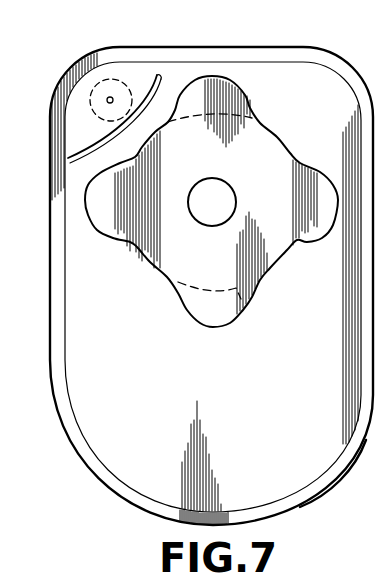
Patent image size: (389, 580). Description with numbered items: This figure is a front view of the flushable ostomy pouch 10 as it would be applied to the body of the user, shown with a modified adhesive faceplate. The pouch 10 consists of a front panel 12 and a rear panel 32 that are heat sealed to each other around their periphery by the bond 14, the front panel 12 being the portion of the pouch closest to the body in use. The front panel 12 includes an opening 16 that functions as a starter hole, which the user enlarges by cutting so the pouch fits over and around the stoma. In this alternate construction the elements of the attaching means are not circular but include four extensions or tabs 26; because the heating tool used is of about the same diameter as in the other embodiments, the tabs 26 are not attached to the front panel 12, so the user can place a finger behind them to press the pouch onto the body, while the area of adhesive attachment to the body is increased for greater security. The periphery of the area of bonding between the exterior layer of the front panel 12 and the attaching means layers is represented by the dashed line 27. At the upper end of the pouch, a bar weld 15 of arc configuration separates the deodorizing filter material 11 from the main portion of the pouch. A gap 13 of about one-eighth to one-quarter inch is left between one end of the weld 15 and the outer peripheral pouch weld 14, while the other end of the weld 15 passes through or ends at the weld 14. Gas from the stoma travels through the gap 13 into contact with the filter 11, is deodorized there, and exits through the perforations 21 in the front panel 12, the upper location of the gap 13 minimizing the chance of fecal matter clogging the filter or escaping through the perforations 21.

The flushable ostomy pouch 10 is at (88, 483).
The deodorizing filter material 11 is at (106, 79).
The front panel 12 is at (250, 401).
The gap 13 is at (155, 73).
The bond 14 is at (318, 479).
The bar weld 15 is at (77, 160).
The opening 16 is at (196, 209).
The perforations 21 is at (110, 100).
The tabs 26 is at (300, 178).
The dashed line 27 is at (247, 306).
The rear panel 32 is at (110, 388).